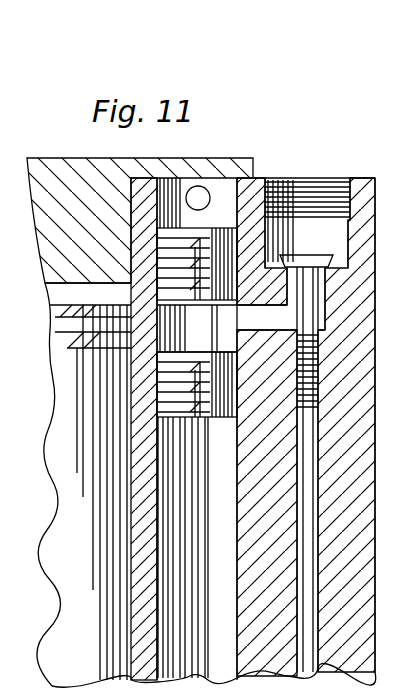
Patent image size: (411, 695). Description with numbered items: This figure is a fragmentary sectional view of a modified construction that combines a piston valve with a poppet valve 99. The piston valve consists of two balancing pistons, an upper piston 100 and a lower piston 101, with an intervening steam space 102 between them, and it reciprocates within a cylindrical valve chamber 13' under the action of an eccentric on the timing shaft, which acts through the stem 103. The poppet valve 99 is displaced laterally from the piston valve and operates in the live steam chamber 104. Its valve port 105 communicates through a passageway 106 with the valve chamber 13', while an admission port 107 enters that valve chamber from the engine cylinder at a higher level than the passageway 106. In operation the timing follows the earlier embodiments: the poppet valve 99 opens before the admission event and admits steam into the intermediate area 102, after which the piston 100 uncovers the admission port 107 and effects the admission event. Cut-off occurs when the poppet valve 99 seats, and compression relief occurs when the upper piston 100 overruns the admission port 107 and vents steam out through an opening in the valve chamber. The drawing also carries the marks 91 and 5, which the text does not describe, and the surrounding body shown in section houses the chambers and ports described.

The ball 91 is at (205, 208).
The poppet valve 99 is at (302, 263).
The upper balancing piston 100 is at (180, 257).
The lower balancing piston 101 is at (170, 385).
The intervening steam space 102 is at (198, 328).
The stem 103 is at (197, 618).
The live steam chamber 104 is at (302, 228).
The valve port 105 is at (328, 278).
The passageway 106 is at (267, 299).
The admission port 107 is at (152, 297).
The cylindrical valve chamber 13' is at (128, 547).
The frame 5 is at (6, 345).